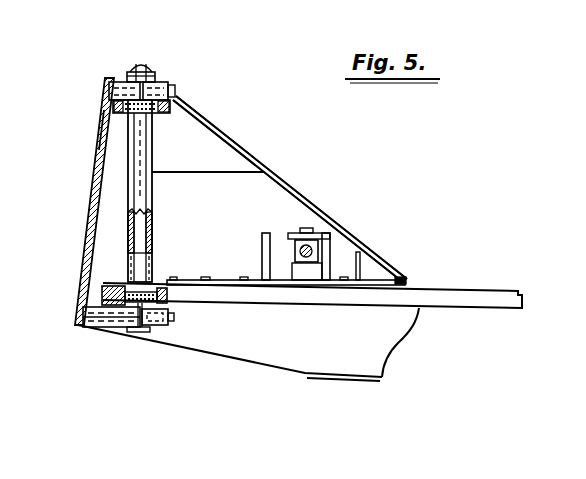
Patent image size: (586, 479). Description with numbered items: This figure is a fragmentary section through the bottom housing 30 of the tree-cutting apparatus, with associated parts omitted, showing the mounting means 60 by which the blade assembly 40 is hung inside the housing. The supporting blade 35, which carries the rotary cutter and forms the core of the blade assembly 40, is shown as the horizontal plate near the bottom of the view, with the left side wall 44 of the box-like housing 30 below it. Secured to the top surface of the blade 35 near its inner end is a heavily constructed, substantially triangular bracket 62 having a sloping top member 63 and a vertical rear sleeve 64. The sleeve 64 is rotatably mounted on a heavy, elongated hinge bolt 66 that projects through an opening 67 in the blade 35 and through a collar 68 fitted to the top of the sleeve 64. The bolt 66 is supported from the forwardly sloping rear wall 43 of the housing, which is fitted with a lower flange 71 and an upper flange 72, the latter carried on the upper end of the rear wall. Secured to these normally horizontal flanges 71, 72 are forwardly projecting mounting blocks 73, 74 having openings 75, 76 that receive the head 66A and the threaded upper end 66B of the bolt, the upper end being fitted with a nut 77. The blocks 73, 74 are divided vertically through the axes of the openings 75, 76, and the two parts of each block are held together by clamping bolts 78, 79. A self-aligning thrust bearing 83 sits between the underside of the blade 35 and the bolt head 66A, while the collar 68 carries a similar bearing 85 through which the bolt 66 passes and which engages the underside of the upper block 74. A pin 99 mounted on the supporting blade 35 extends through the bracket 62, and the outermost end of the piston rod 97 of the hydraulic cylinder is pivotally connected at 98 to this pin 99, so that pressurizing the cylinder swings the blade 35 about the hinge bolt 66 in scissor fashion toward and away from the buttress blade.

The bottom housing 30 is at (273, 355).
The supporting blade 35 is at (483, 292).
The blade assembly 40 is at (292, 166).
The rear wall 43 is at (92, 205).
The left side wall 44 is at (380, 327).
The mounting means 60 is at (168, 152).
The bracket 62 is at (305, 198).
The sloping top member 63 is at (263, 170).
The rear sleeve 64 is at (143, 192).
The hinge bolt 66 is at (141, 232).
The head of the bolt 66A is at (140, 328).
The threaded upper end of the bolt 66B is at (152, 42).
The opening 67 is at (150, 272).
The collar 68 is at (200, 122).
The lower flange 71 is at (98, 330).
The upper flange 72 is at (106, 88).
The mounting block 73 is at (115, 326).
The mounting block 74 is at (170, 88).
The opening 75 is at (150, 331).
The opening 76 is at (163, 84).
The nut 77 is at (127, 68).
The clamping bolt 78 is at (175, 317).
The clamping bolt 79 is at (176, 92).
The self-aligning thrust bearing 83 is at (98, 295).
The bearing 85 is at (104, 123).
The piston rod 97 is at (333, 252).
The pivotal connection 98 is at (297, 250).
The pin 99 is at (310, 229).